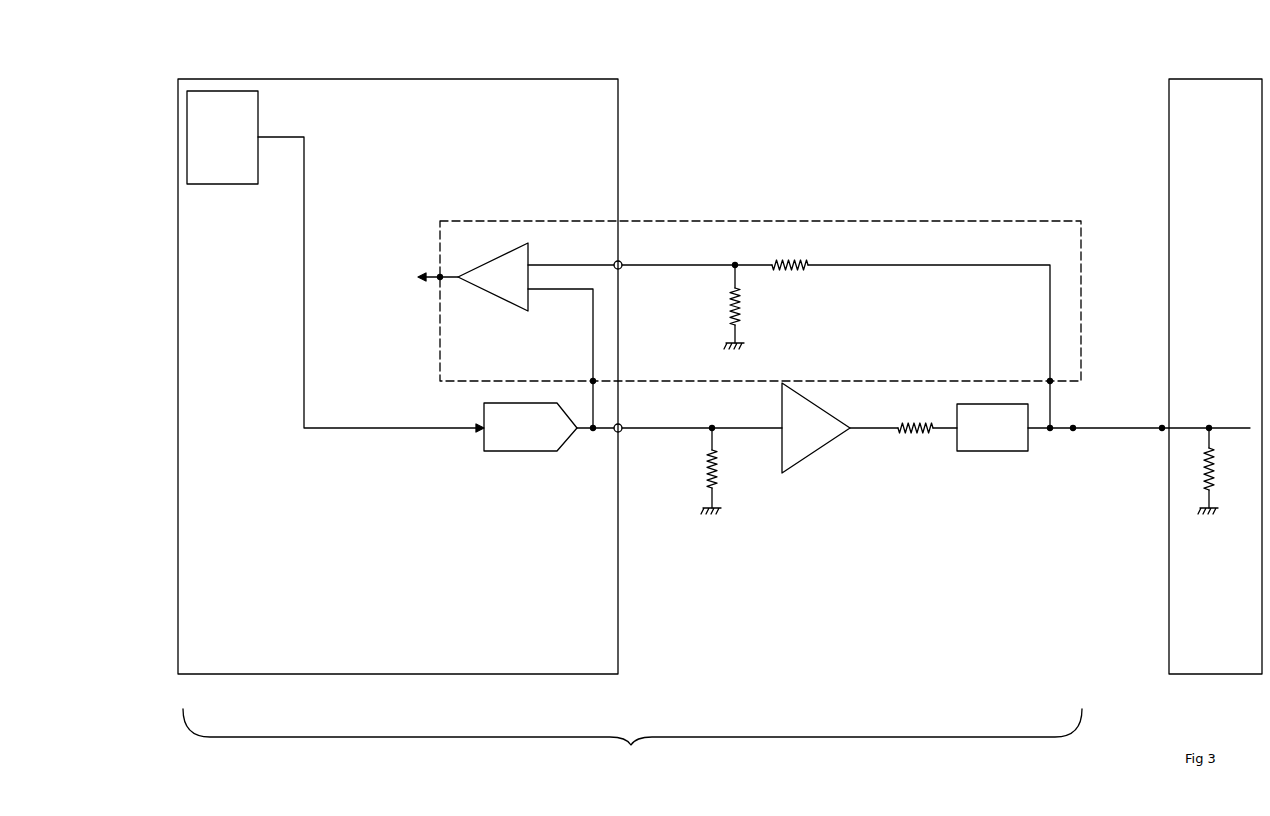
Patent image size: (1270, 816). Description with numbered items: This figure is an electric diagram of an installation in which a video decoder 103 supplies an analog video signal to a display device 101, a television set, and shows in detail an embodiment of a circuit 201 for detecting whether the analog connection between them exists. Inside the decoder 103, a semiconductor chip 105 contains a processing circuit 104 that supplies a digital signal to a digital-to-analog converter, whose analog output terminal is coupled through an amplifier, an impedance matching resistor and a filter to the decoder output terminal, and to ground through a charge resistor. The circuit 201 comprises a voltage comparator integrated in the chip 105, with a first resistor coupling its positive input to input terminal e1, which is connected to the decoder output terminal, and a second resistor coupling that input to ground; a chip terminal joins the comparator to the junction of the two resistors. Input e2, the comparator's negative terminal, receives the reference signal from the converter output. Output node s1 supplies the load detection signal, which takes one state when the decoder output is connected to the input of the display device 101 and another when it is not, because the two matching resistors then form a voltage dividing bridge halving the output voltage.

The semiconductor chip 105 is at (432, 79).
The processing circuit 104 is at (222, 137).
The circuit for detecting an analog connection 201 is at (902, 221).
The video decoder 103 is at (672, 452).
The display device 101 is at (1206, 676).
The input terminal e1 is at (1052, 382).
The input e2 is at (592, 382).
The node s1 is at (440, 278).